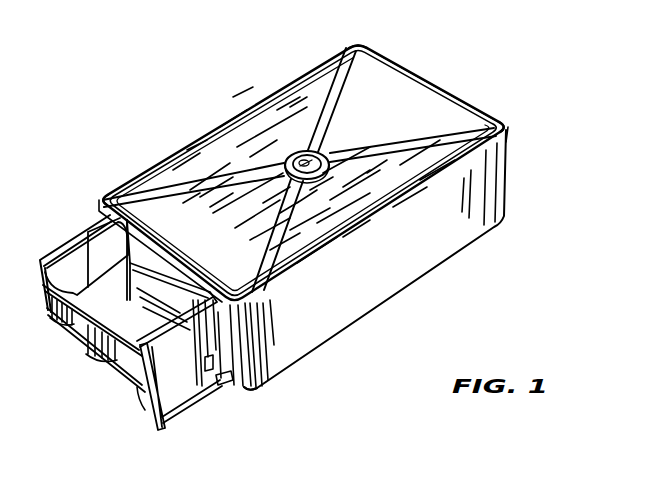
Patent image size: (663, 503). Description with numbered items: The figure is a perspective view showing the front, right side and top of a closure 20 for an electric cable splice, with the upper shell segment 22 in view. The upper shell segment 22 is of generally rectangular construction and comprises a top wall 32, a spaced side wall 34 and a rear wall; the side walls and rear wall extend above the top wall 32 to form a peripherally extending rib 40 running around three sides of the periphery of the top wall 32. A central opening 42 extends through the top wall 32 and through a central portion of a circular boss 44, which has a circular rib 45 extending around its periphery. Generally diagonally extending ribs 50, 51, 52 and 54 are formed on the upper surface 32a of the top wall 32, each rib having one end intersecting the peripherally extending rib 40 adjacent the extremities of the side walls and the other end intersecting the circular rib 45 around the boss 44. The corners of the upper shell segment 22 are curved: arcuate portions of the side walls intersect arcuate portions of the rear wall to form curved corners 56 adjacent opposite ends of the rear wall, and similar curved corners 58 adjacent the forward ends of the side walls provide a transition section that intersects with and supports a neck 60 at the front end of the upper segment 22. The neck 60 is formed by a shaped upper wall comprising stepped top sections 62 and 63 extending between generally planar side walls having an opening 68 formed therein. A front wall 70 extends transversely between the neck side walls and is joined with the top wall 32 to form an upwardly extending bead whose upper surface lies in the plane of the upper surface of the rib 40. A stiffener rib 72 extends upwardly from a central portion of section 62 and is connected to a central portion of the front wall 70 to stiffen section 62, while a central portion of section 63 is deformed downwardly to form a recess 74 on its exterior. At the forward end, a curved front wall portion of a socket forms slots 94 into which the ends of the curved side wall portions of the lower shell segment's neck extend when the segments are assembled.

The closure 20 is at (247, 94).
The upper shell segment 22 is at (231, 116).
The top wall 32 is at (372, 78).
The upper surface 32a is at (215, 150).
The side wall 34 is at (317, 335).
The peripherally extending rib 40 is at (443, 80).
The central opening 42 is at (340, 149).
The circular boss 44 is at (305, 152).
The circular rib 45 is at (331, 139).
The diagonally extending rib 50 is at (343, 86).
The diagonally extending rib 51 is at (465, 134).
The diagonally extending rib 52 is at (269, 261).
The diagonally extending rib 54 is at (149, 186).
The curved corner 56 is at (362, 44).
The curved corner 58 is at (97, 201).
The neck 60 is at (166, 432).
The stepped top section 62 is at (199, 302).
The stepped top section 63 is at (131, 376).
The opening 68 is at (211, 384).
The front wall 70 is at (175, 276).
The stiffener rib 72 is at (175, 245).
The recess 74 is at (86, 349).
The slot 94 is at (147, 390).